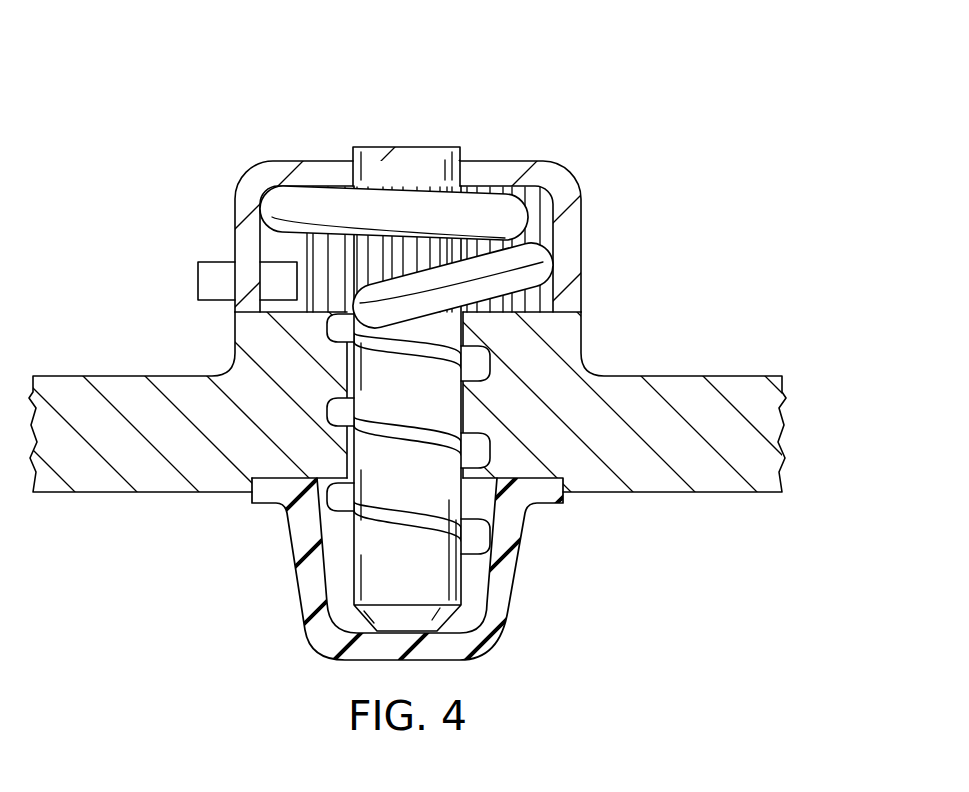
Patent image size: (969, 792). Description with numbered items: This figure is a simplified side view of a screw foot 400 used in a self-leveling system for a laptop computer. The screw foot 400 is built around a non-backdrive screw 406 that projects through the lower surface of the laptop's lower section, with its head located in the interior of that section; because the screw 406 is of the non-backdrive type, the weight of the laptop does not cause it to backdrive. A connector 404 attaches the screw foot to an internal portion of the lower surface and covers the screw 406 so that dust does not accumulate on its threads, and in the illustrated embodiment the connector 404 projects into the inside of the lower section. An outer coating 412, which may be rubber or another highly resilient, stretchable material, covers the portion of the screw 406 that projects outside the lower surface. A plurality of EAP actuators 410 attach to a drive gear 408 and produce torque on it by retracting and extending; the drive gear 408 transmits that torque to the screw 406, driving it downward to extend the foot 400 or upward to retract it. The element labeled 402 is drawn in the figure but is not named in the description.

The screw foot 400 is at (481, 78).
The cap 402 is at (276, 160).
The connector 404 is at (198, 282).
The non-backdrive screw 406 is at (463, 583).
The drive gear 408 is at (298, 253).
The EAP actuators 410 is at (540, 258).
The outer coating 412 is at (297, 603).